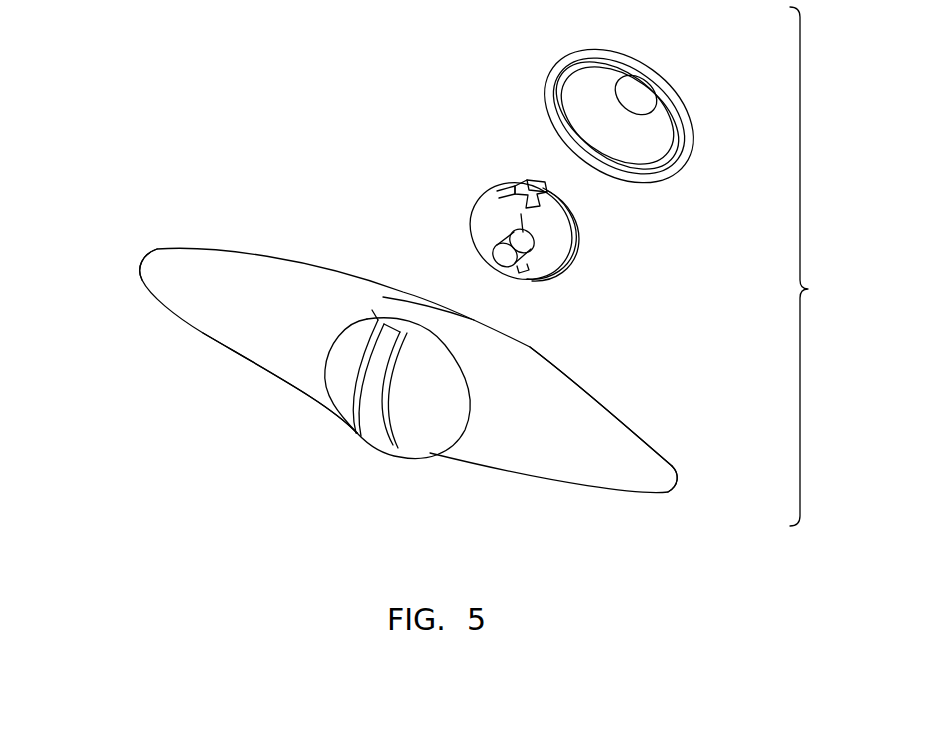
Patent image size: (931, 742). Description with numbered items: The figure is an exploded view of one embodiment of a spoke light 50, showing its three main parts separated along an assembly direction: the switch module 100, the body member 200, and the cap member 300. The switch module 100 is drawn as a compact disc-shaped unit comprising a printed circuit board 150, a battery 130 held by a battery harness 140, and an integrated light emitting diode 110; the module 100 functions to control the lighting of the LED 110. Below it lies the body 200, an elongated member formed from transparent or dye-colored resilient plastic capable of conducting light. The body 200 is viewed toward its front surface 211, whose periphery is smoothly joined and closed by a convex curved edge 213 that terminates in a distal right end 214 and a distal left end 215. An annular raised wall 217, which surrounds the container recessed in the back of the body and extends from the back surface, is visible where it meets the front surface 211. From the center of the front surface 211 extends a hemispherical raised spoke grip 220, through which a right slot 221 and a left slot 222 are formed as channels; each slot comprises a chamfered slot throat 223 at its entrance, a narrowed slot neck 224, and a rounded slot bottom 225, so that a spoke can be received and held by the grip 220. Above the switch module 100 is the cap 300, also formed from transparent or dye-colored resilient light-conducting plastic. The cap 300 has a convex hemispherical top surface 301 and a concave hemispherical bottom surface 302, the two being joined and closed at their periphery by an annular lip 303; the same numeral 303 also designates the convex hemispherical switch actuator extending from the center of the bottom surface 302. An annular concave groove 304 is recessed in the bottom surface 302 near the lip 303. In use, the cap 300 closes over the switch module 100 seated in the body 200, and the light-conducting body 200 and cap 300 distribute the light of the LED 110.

The spoke light 50 is at (353, 126).
The switch module 100 is at (602, 258).
The light emitting diode (LED) 110 is at (501, 232).
The battery 130 is at (513, 174).
The battery harness 140 is at (532, 182).
The printed circuit board 150 is at (497, 206).
The body member 200 is at (587, 355).
The front surface 211 is at (544, 431).
The convex curved edge 213 is at (270, 372).
The distal right end 214 is at (680, 473).
The distal left end 215 is at (152, 263).
The annular raised wall 217 is at (452, 311).
The spoke grip 220 is at (454, 411).
The right slot 221 is at (392, 463).
The left slot 222 is at (354, 440).
The chamfered slot throat 223 is at (358, 428).
The narrowed slot neck 224 is at (355, 385).
The rounded slot bottom 225 is at (383, 330).
The cap member 300 is at (704, 67).
The convex hemispherical top surface 301 is at (633, 57).
The concave hemispherical bottom surface 302 is at (597, 76).
The annular lip 303 is at (558, 77).
The annular concave groove 304 is at (620, 157).